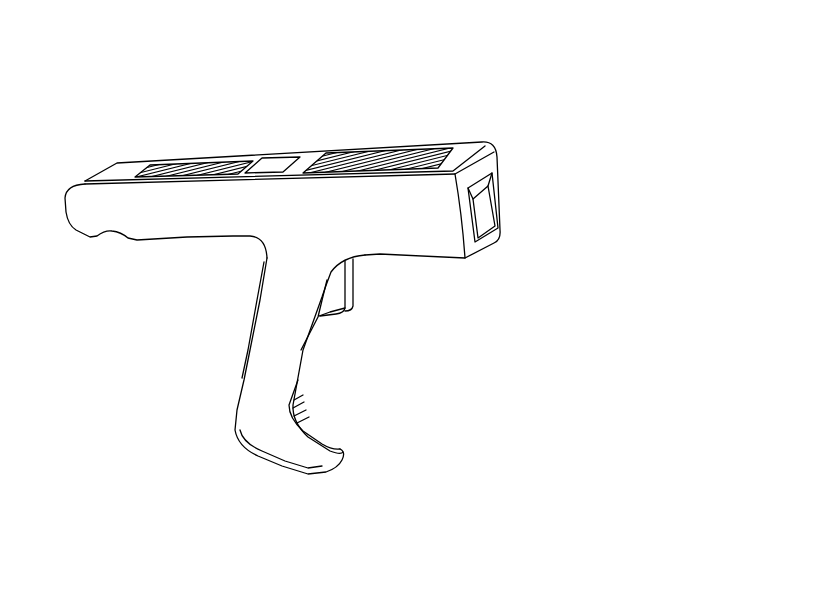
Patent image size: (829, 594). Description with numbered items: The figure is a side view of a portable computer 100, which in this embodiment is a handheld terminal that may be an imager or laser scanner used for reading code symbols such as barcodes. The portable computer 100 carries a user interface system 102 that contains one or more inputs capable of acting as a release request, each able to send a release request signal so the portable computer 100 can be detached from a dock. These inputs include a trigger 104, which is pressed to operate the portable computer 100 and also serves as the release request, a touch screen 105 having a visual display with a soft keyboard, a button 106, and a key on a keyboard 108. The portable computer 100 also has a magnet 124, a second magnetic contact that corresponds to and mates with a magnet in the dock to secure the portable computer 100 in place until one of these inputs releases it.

The portable computer 100 is at (189, 363).
The user interface system 102 is at (517, 87).
The trigger 104 is at (369, 290).
The touch screen 105 is at (414, 149).
The button 106 is at (263, 161).
The keyboard 108 is at (168, 167).
The magnet 124 is at (190, 232).